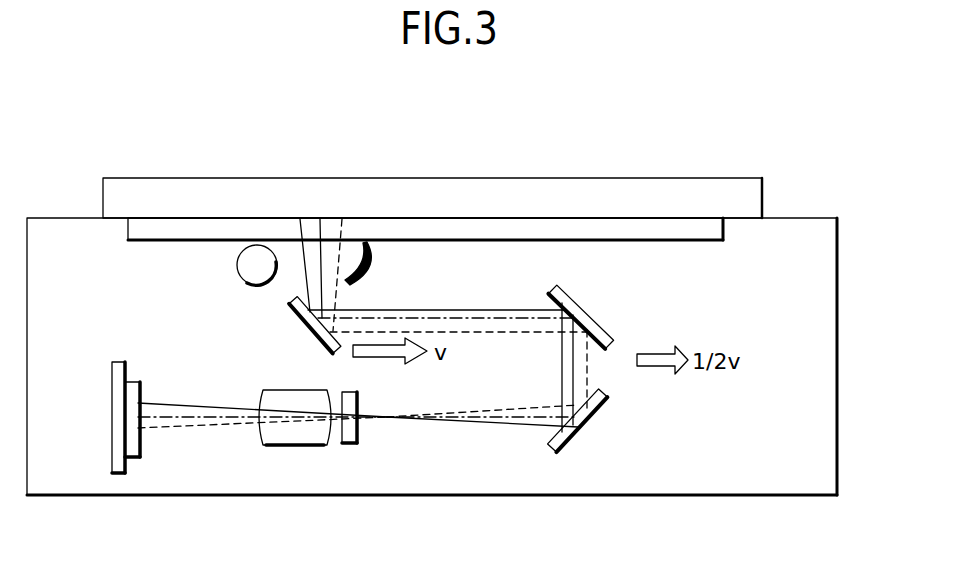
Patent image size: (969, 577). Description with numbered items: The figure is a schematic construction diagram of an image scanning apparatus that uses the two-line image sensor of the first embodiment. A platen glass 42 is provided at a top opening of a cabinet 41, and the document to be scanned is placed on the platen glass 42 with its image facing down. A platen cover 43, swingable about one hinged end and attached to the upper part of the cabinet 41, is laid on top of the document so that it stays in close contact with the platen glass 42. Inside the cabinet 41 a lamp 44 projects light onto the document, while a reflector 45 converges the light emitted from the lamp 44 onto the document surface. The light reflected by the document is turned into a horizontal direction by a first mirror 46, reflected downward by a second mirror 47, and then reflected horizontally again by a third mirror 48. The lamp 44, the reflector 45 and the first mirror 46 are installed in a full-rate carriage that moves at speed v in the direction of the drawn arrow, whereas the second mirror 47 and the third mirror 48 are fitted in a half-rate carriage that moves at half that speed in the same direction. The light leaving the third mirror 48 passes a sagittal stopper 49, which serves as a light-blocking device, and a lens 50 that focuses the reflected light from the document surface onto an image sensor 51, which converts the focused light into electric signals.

The cabinet 41 is at (838, 322).
The platen glass 42 is at (624, 225).
The platen cover 43 is at (541, 195).
The lamp 44 is at (238, 264).
The reflector 45 is at (372, 264).
The first mirror 46 is at (294, 312).
The second mirror 47 is at (603, 322).
The third mirror 48 is at (597, 412).
The sagittal stopper 49 is at (352, 445).
The lens 50 is at (295, 447).
The image sensor 51 is at (123, 475).